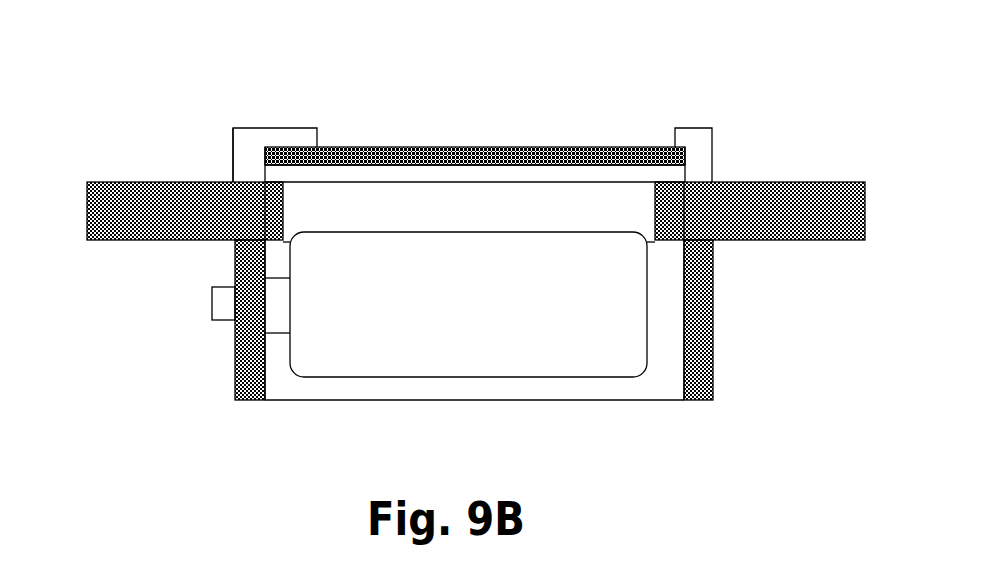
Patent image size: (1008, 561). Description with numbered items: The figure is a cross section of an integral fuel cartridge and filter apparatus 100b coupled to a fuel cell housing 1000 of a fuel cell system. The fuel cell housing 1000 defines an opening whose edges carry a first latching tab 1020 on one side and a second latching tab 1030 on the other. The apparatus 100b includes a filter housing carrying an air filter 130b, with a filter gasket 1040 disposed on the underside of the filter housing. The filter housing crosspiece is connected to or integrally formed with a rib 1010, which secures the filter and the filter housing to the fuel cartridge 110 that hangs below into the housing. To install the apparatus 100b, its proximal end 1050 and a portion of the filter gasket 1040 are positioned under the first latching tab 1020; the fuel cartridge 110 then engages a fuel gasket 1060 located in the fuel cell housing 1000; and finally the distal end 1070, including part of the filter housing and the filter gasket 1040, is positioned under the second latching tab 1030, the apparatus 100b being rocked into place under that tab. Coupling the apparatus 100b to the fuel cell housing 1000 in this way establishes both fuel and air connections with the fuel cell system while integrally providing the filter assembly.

The fuel cell housing 1000 is at (183, 240).
The first latching tab 1020 is at (232, 155).
The proximal end 1050 is at (268, 148).
The integral fuel cartridge and filter apparatus 100b is at (488, 145).
The filter gasket 1040 is at (397, 182).
The air filter 130b is at (577, 145).
The distal end 1070 is at (683, 147).
The second latching tab 1030 is at (712, 155).
The rib 1010 is at (622, 215).
The fuel cartridge 110 is at (468, 305).
The fuel gasket 1060 is at (277, 305).